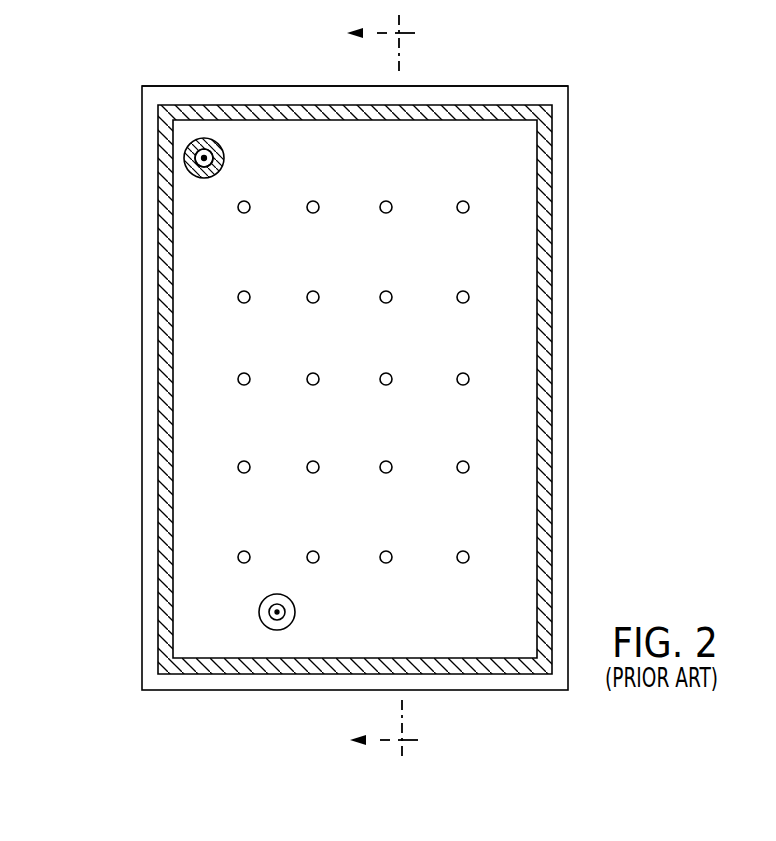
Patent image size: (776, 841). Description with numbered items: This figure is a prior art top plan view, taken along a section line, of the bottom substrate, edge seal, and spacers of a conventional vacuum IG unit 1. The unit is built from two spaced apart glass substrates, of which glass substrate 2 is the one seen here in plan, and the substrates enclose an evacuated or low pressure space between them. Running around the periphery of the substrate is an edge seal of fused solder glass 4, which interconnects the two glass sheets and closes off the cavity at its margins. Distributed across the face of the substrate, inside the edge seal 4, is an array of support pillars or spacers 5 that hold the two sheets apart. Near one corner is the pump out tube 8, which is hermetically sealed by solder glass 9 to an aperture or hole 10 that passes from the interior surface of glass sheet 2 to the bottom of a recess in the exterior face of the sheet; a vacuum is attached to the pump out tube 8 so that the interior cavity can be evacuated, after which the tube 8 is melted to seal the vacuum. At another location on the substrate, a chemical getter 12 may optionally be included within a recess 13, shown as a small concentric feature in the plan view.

The vacuum IG unit 1 is at (122, 566).
The glass substrate 2 is at (347, 97).
The edge seal of fused solder glass 4 is at (260, 108).
The support pillars or spacers 5 is at (470, 297).
The pump out tube 8 is at (192, 155).
The solder glass 9 is at (203, 183).
The aperture or hole 10 is at (200, 159).
The chemical getter 12 is at (268, 619).
The recess 13 is at (294, 610).